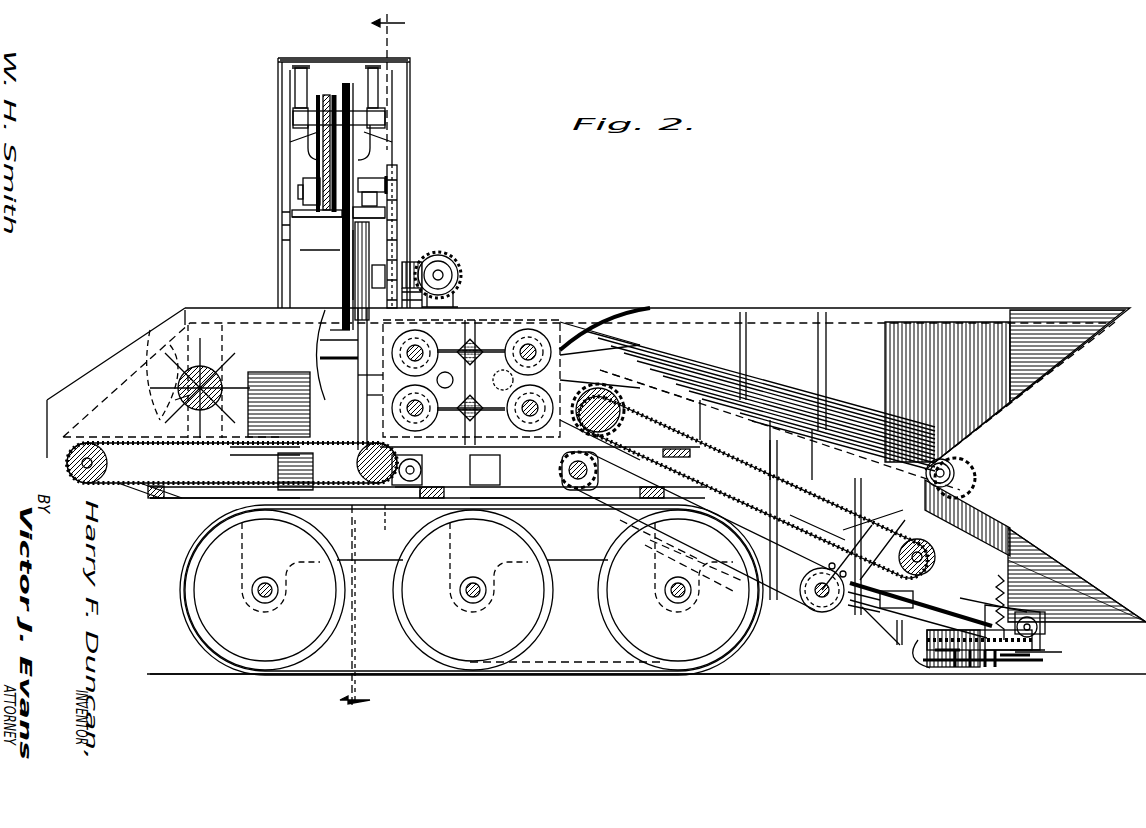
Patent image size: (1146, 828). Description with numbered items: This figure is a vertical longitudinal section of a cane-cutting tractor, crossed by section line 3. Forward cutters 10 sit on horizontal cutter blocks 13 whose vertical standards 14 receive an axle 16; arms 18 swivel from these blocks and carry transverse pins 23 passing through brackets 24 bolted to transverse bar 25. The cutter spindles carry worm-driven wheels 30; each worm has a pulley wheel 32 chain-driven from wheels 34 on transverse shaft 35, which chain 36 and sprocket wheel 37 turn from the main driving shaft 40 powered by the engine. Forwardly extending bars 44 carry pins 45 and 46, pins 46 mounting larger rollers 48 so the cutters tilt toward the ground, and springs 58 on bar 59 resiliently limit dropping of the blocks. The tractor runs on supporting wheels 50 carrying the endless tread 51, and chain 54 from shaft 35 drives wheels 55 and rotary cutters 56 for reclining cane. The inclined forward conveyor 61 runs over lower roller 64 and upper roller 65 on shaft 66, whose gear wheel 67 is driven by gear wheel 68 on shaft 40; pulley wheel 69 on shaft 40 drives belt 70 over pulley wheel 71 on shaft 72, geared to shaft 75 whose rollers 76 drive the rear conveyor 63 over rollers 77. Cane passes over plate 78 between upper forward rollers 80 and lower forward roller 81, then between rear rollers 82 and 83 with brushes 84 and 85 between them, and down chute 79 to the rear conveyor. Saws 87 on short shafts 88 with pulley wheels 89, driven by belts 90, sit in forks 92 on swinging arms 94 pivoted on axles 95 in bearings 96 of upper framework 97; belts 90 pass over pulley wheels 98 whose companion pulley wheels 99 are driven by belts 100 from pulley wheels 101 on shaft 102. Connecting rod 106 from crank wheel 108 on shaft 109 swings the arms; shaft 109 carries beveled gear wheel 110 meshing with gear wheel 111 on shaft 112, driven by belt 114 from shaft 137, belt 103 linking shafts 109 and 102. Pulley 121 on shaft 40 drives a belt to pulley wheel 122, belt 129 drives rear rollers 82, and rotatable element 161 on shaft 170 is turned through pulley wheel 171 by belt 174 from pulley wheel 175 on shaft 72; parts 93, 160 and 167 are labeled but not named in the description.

The section line 3- 3 is at (372, 370).
The cutters 10 is at (1045, 660).
The cutter blocks 13 is at (1062, 652).
The vertical standards 14 is at (1050, 640).
The pin, bolt or axle 16 is at (960, 668).
The arms 18 is at (912, 642).
The transverse pins 23 is at (906, 570).
The brackets 24 is at (880, 660).
The transverse bar 25 is at (870, 622).
The wheels 30 is at (1040, 665).
The pulley wheel 32 is at (1040, 627).
The wheels 34 is at (812, 604).
The transverse shaft 35 is at (822, 598).
The chain 36 is at (748, 588).
The sprocket wheel 37 is at (597, 475).
The main driving shaft 40 is at (578, 510).
The bars 44 is at (1010, 680).
The pins 45 is at (1025, 660).
The pins 46 is at (995, 668).
The rollers 48 is at (940, 668).
The supporting wheels 50 is at (615, 620).
The endless element 51 is at (570, 676).
The chain or belt 54 is at (826, 532).
The wheels 55 is at (955, 475).
The rotary cutters 56 is at (968, 485).
The springs 58 is at (1062, 572).
The bar 59 is at (1025, 542).
The forward conveying element 61 is at (750, 500).
The rear conveyor 63 is at (215, 483).
The lower rollers 64 is at (930, 568).
The upper rollers 65 is at (645, 425).
The transverse shaft 66 is at (622, 410).
The gear wheel 67 is at (690, 378).
The gear wheel 68 is at (616, 430).
The pulley wheel 69 is at (548, 510).
The belt 70 is at (500, 505).
The pulley wheel 71 is at (430, 497).
The shaft 72 is at (421, 470).
The shaft 75 is at (402, 490).
The rollers 76 is at (392, 530).
The rollers 77 is at (67, 463).
The plate 78 is at (648, 383).
The slide plate or chute 79 is at (367, 395).
The upper forward rollers 80 is at (545, 325).
The lower forward roller 81 is at (625, 360).
The rear upper rollers 82 is at (455, 333).
The lower rollers 83 is at (392, 407).
The brushes 84 is at (505, 330).
The brushes 85 is at (482, 470).
The saws or cutters 87 is at (358, 378).
The short shafts 88 is at (322, 362).
The pulley wheels 89 is at (320, 345).
The belts 90 is at (346, 253).
The yokes or forks 92 is at (337, 330).
The spring 93 is at (990, 572).
The swinging arms 94 is at (300, 252).
The upper axles 95 is at (385, 115).
The bearings 96 is at (300, 90).
The upper framework 97 is at (412, 62).
The pulley wheels 98 is at (372, 125).
The pulley wheels 99 is at (325, 125).
The belts 100 is at (303, 182).
The pulley wheels 101 is at (330, 205).
The shaft 102 is at (400, 185).
The belt 103 is at (400, 215).
The connecting rod 106 is at (353, 265).
The crank wheel 108 is at (397, 242).
The shaft 109 is at (440, 254).
The beveled gear wheel 110 is at (460, 264).
The gear wheel 111 is at (458, 280).
The shaft 112 is at (424, 290).
The belt 114 is at (455, 302).
The pulley 121 is at (635, 535).
The pulley wheel 122 is at (560, 470).
The belt 129 is at (622, 333).
The shaft 137 is at (548, 322).
The guide 160 is at (225, 375).
The rotatable element 161 is at (185, 405).
The reel 167 is at (180, 400).
The shaft 170 is at (205, 335).
The pulley wheel 171 is at (170, 345).
The belt 174 is at (215, 498).
The pulley wheel 175 is at (380, 560).